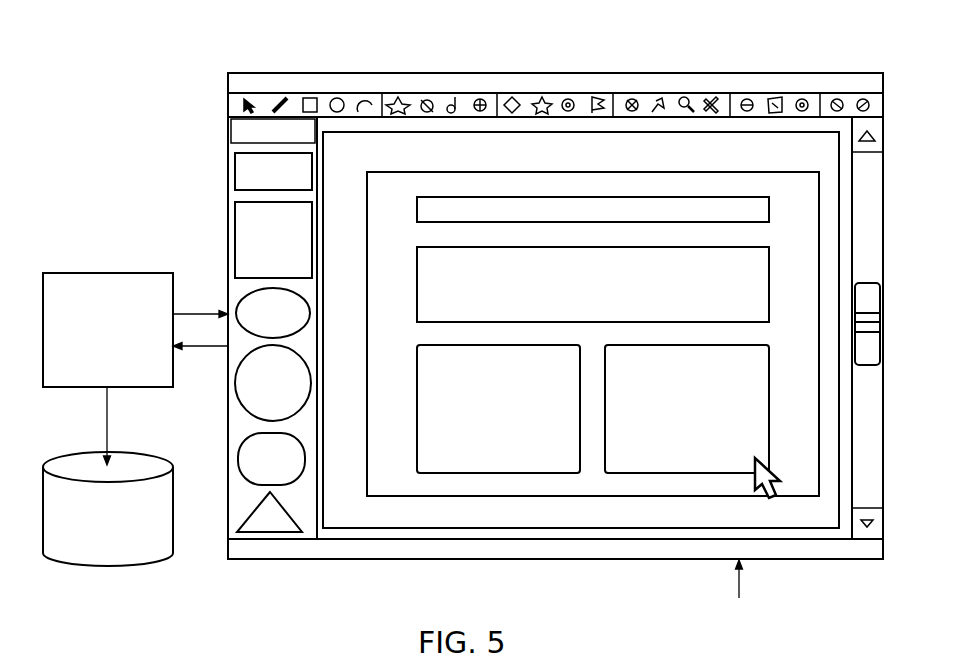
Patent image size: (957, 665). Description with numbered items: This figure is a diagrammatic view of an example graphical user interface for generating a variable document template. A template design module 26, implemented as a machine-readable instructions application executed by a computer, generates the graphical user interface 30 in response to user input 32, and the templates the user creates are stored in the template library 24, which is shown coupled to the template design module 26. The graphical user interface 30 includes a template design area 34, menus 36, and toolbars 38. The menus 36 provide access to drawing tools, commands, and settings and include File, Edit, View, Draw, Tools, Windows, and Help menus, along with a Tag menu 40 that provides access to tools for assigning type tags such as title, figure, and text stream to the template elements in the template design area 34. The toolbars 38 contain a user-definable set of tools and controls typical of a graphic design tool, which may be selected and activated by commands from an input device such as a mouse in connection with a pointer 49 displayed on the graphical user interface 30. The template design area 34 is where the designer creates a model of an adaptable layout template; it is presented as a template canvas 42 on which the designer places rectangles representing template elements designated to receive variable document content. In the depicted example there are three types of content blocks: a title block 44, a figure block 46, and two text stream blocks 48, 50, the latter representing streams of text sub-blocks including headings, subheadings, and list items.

The template library 24 is at (142, 456).
The template design module 26 is at (160, 272).
The graphical user interface 30 is at (207, 45).
The user input 32 is at (743, 583).
The template design area 34 is at (357, 163).
The menus 36 is at (227, 88).
The toolbars 38 is at (694, 93).
The Tag menu 40 is at (336, 71).
The template canvas 42 is at (465, 171).
The title block 44 is at (770, 207).
The figure block 46 is at (770, 283).
The text stream block 48 is at (415, 409).
The pointer 49 is at (773, 497).
The text stream block 50 is at (772, 408).